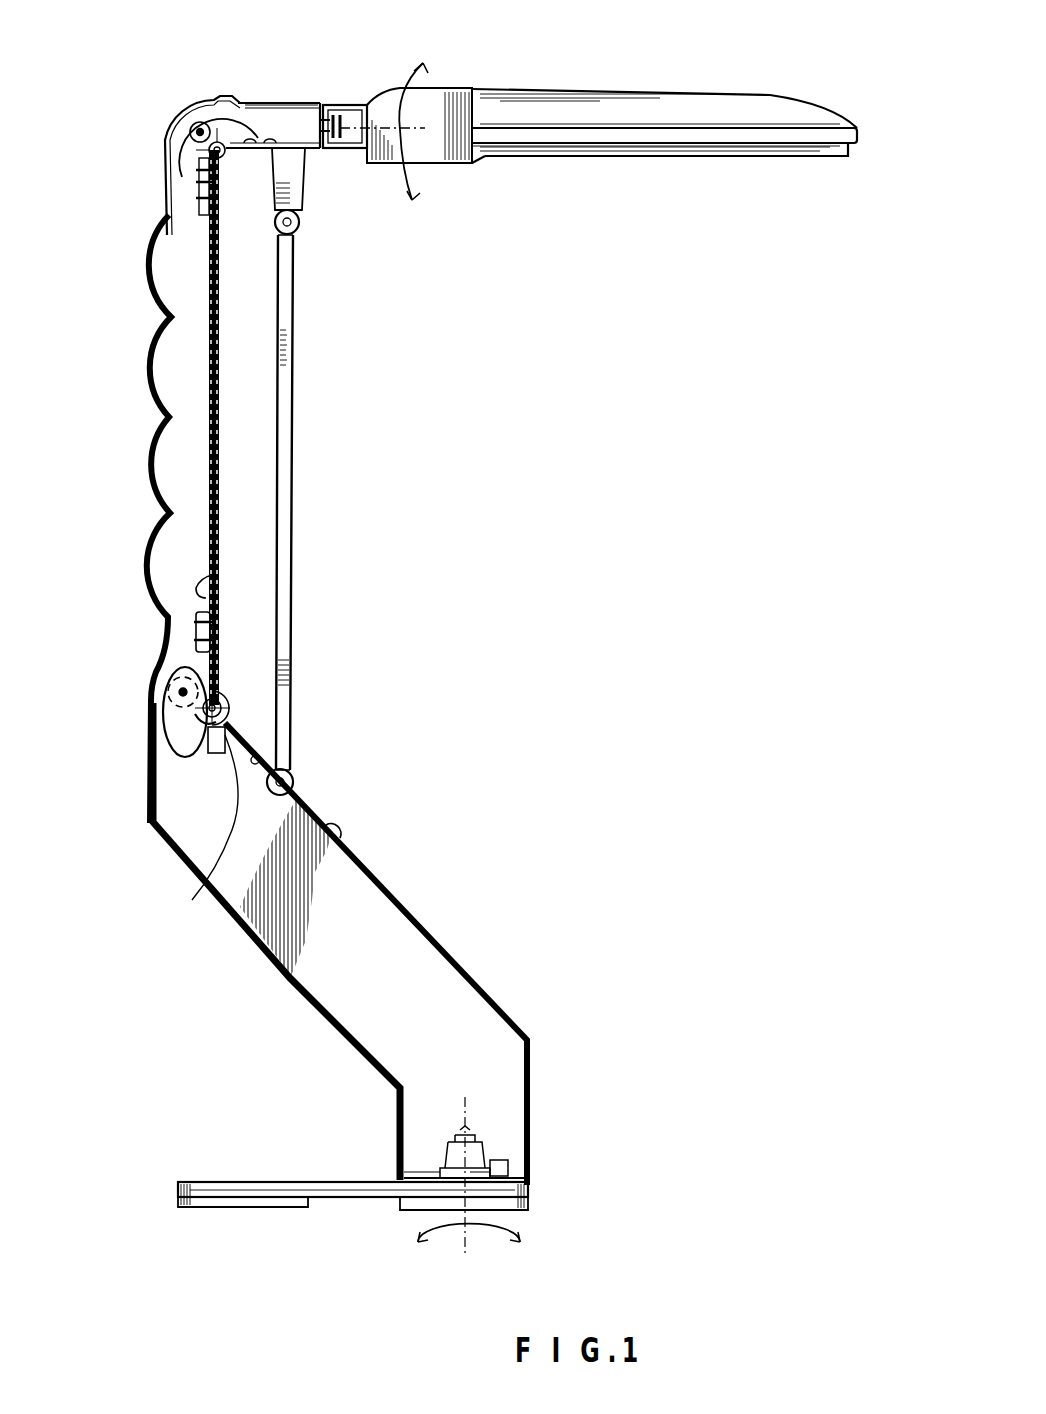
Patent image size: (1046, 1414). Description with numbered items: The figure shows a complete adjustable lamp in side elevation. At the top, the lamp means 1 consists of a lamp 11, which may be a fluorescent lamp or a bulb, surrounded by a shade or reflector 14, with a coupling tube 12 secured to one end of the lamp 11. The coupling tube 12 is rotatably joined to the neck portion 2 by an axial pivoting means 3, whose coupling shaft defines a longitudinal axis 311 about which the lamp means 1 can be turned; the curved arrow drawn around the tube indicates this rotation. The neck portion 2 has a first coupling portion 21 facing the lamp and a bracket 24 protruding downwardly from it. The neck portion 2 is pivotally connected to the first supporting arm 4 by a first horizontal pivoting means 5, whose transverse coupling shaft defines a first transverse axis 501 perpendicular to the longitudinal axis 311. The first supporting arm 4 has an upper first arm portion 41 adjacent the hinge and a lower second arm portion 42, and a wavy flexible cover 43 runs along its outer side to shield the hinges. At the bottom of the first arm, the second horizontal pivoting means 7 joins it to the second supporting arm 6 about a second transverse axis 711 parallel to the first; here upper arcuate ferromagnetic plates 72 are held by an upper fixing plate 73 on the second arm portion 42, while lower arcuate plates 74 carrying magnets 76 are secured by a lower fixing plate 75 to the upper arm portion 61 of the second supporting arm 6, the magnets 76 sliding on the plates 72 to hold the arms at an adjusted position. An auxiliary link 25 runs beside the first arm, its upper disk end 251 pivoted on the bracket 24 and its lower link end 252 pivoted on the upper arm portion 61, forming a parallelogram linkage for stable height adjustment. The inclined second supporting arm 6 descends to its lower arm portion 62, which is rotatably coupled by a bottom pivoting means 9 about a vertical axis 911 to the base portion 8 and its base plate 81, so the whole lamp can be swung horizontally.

The lamp means 1 is at (667, 90).
The shade or reflector 14 is at (795, 105).
The lamp 11 is at (656, 146).
The coupling tube 12 is at (353, 103).
The longitudinal axis 311 is at (388, 128).
The axial pivoting means 3 is at (331, 160).
The neck portion 2 is at (270, 101).
The first coupling portion 21 is at (313, 103).
The first horizontal pivoting means 5 is at (196, 160).
The first transverse axis 501 is at (215, 144).
The bracket 24 is at (305, 188).
The upper disk end 251 is at (290, 237).
The auxiliary link 25 is at (296, 365).
The first supporting arm 4 is at (210, 345).
The first arm portion 41 is at (211, 220).
The flexible cover 43 is at (153, 455).
The second arm portion 42 is at (212, 576).
The upper fixing plate 73 is at (212, 628).
The second horizontal pivoting means 7 is at (174, 745).
The upper arcuate ferromagnetic plate 72 is at (187, 660).
The second transverse axis 711 is at (222, 697).
The magnet 76 is at (168, 715).
The lower arcuate plate 74 is at (203, 755).
The lower fixing plate 75 is at (233, 753).
The upper arm portion 61 is at (277, 757).
The lower link end 252 is at (294, 780).
The second supporting arm 6 is at (301, 997).
The lower arm portion 62 is at (405, 1140).
The bottom pivoting means 9 is at (497, 1153).
The vertical axis 911 is at (463, 1248).
The base portion 8 is at (291, 1180).
The base plate 81 is at (355, 1198).